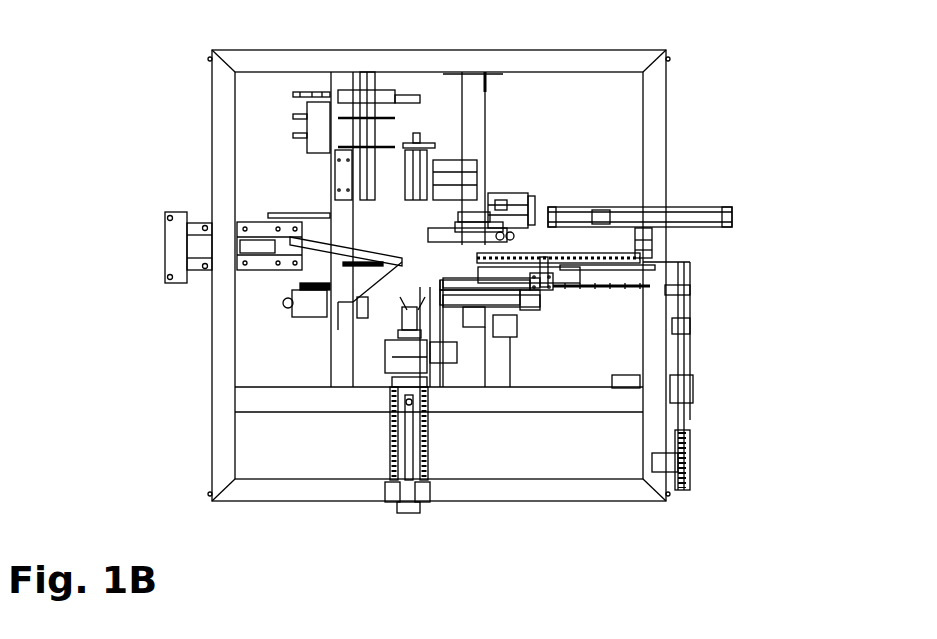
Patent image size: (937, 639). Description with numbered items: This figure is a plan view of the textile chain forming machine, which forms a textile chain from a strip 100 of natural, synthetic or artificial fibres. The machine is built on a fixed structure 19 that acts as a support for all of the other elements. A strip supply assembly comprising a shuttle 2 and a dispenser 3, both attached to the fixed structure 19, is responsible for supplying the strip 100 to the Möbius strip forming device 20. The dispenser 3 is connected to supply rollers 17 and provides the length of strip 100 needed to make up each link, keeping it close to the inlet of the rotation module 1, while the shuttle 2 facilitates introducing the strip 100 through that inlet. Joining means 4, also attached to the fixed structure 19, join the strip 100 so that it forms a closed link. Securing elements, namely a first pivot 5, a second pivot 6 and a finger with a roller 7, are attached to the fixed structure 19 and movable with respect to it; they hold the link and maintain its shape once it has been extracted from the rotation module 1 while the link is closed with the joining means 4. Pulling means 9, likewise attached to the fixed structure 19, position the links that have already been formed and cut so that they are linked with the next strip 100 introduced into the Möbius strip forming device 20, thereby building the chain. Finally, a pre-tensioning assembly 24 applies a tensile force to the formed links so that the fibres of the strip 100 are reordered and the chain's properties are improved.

The rotation module 1 is at (468, 420).
The shuttle 2 is at (550, 152).
The dispenser 3 is at (669, 189).
The joining means 4 is at (415, 100).
The first pivot 5 is at (650, 419).
The second pivot 6 is at (232, 340).
The finger with a roller 7 is at (562, 419).
The pulling means 9 is at (507, 121).
The supply rollers 17 is at (738, 421).
The fixed structure 19 is at (504, 250).
The Möbius strip forming device 20 is at (329, 471).
The pre-tensioning assembly 24 is at (231, 190).
The strip 100 is at (648, 258).